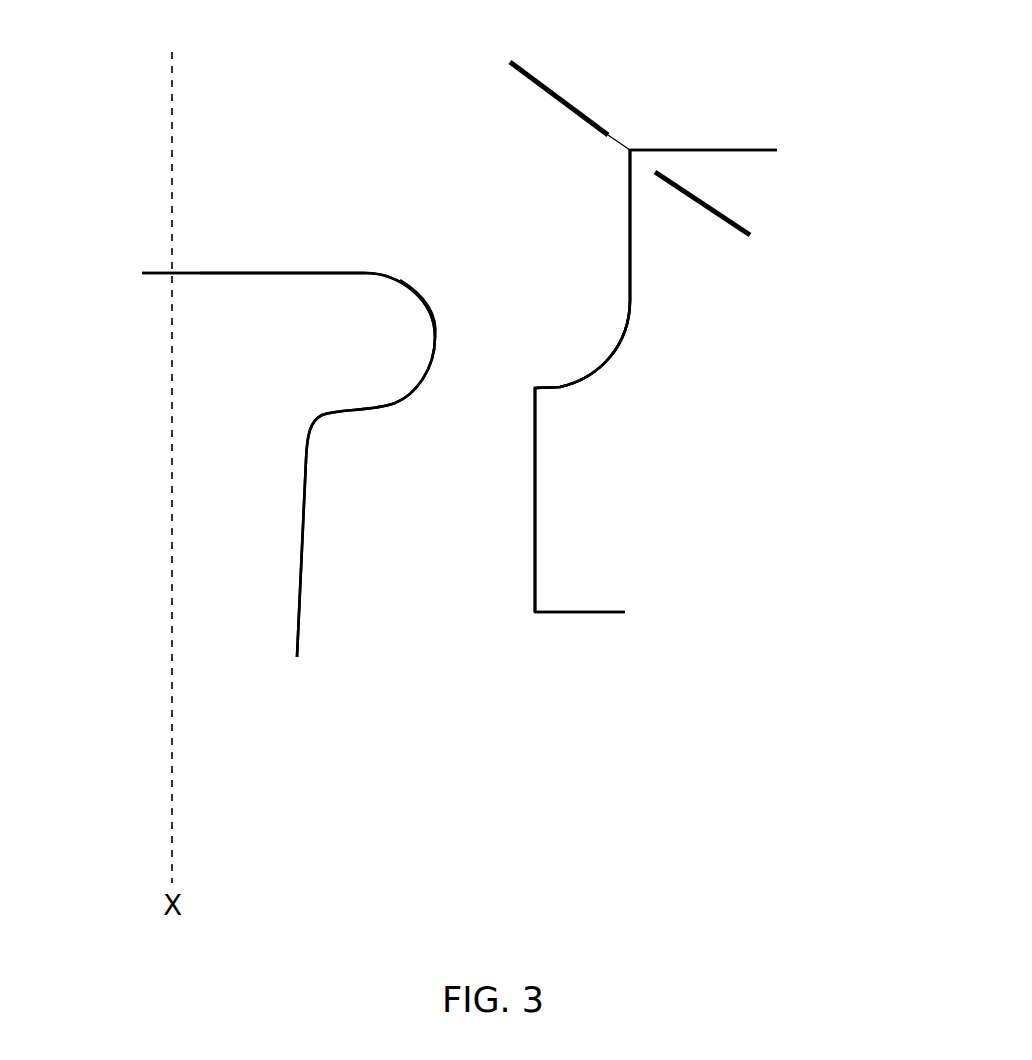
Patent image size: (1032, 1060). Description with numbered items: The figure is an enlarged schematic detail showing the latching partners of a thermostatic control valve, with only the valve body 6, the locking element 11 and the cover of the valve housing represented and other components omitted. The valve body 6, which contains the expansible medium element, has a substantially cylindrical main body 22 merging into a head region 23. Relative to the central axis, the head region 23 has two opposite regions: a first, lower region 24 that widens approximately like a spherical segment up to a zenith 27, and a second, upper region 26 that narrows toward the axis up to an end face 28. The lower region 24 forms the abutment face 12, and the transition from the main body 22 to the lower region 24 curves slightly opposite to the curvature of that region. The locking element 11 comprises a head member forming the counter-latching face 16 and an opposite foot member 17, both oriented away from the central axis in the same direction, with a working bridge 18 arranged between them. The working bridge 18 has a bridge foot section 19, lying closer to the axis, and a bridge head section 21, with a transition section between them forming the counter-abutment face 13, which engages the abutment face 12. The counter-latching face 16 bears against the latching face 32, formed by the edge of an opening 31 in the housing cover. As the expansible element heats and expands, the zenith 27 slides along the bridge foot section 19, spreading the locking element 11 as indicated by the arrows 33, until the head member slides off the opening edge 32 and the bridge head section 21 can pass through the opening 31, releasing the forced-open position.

The valve body 6 is at (243, 455).
The locking element 11 is at (777, 259).
The abutment face 12 is at (415, 403).
The counter-abutment face 13 is at (628, 363).
The counter-latching face 16 is at (723, 137).
The foot member 17 is at (587, 627).
The working bridge 18 is at (632, 252).
The bridge foot section 19 is at (646, 500).
The bridge head section 21 is at (715, 236).
The main body 22 is at (235, 573).
The head region 23 is at (242, 340).
The first, lower region 24 is at (397, 390).
The second, upper region 26 is at (392, 300).
The zenith 27 is at (441, 330).
The end face 28 is at (275, 270).
The opening 31 is at (625, 128).
The latching face 32 is at (608, 137).
The arrows 33 is at (908, 152).